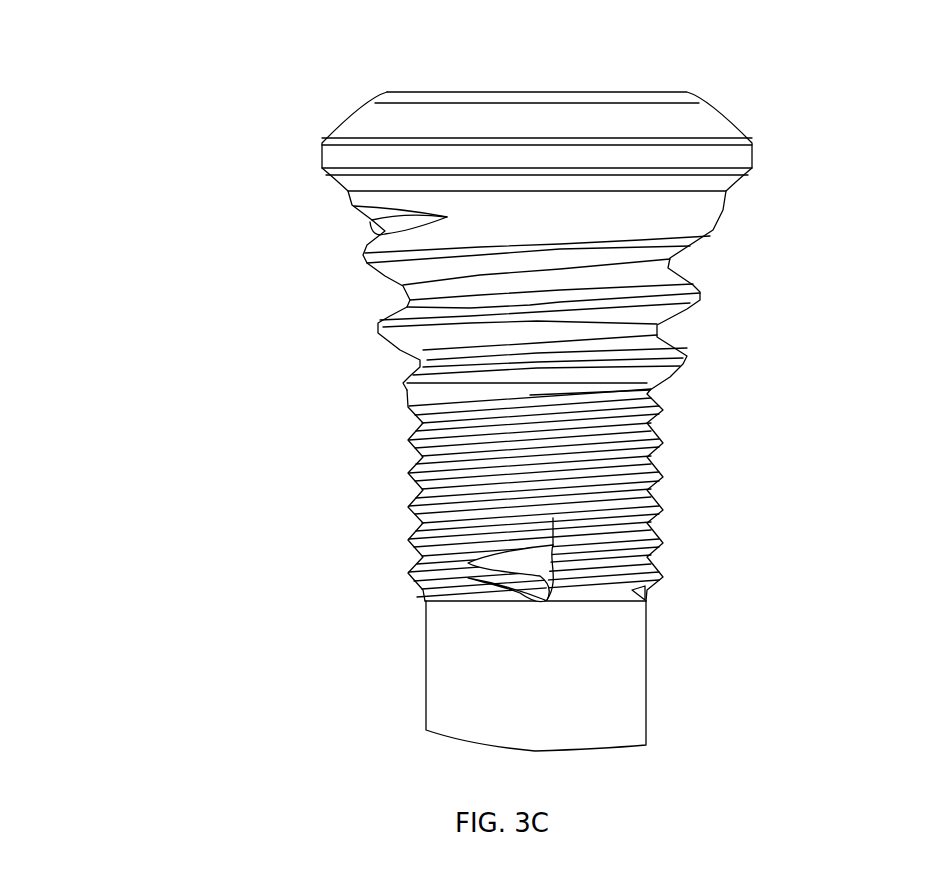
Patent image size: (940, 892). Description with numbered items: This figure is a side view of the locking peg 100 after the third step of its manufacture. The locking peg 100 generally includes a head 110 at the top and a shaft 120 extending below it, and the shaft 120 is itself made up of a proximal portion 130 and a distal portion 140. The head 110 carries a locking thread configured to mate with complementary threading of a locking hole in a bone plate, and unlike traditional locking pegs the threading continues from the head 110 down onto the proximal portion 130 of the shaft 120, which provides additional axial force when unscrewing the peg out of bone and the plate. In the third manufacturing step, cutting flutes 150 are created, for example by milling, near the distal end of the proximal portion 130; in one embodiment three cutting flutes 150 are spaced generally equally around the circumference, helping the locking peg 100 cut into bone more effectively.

The locking peg 100 is at (537, 57).
The head 110 is at (765, 93).
The shaft 120 is at (552, 571).
The proximal portion 130 is at (312, 382).
The distal portion 140 is at (312, 605).
The cutting flutes 150 is at (547, 565).